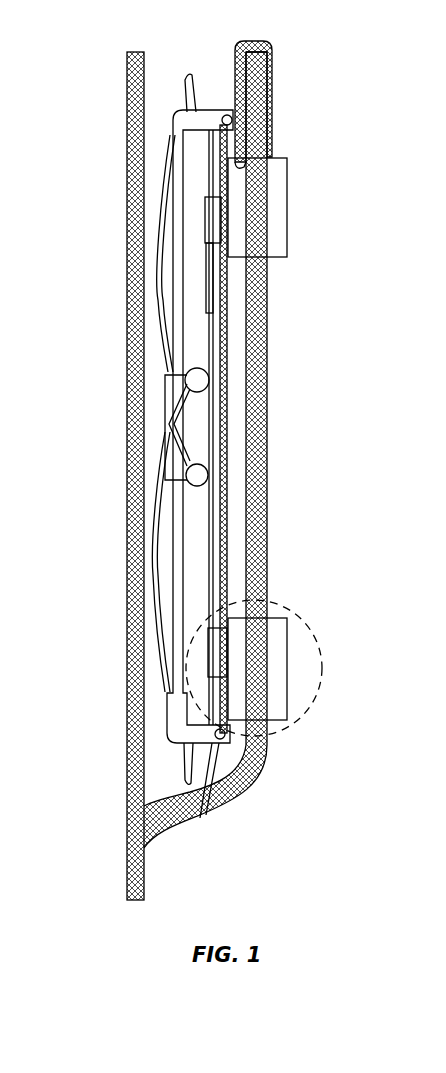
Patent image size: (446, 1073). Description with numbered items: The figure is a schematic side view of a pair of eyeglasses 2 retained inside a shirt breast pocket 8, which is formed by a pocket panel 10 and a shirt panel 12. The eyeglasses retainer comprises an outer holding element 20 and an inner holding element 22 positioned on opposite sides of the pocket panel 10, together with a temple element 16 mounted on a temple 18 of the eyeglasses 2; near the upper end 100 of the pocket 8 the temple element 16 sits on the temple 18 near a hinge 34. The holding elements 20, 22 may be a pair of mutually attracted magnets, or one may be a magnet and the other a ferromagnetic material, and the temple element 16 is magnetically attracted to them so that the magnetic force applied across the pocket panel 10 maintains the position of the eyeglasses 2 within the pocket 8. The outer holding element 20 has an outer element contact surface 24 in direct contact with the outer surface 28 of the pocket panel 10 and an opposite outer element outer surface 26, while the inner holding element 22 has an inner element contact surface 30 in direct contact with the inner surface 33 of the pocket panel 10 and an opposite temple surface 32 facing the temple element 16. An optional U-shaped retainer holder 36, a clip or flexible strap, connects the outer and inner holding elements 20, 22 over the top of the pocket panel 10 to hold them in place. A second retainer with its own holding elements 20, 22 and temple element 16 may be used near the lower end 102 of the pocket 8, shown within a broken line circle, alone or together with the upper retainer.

The eyeglasses 2 is at (160, 130).
The pocket 8 is at (238, 808).
The pocket panel 10 is at (257, 310).
The shirt panel 12 is at (137, 403).
The temple element 16 is at (196, 221).
The temple 18 is at (220, 348).
The outer holding element 20 is at (280, 180).
The inner holding element 22 is at (233, 247).
The outer element contact surface 24 is at (260, 232).
The outer element outer surface 26 is at (290, 243).
The outer surface 28 is at (270, 480).
The inner element contact surface 30 is at (252, 178).
The temple surface 32 is at (218, 176).
The inner surface 33 is at (243, 507).
The hinge 34 is at (207, 110).
The retainer holder 36 is at (268, 42).
The upper end 100 is at (310, 118).
The lower end 102 is at (312, 750).